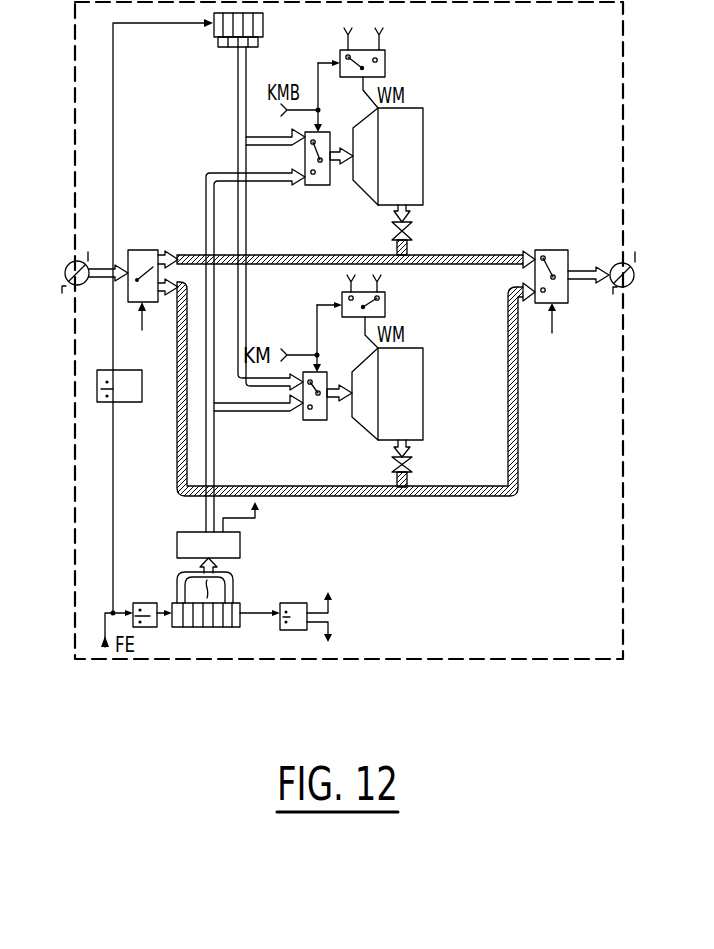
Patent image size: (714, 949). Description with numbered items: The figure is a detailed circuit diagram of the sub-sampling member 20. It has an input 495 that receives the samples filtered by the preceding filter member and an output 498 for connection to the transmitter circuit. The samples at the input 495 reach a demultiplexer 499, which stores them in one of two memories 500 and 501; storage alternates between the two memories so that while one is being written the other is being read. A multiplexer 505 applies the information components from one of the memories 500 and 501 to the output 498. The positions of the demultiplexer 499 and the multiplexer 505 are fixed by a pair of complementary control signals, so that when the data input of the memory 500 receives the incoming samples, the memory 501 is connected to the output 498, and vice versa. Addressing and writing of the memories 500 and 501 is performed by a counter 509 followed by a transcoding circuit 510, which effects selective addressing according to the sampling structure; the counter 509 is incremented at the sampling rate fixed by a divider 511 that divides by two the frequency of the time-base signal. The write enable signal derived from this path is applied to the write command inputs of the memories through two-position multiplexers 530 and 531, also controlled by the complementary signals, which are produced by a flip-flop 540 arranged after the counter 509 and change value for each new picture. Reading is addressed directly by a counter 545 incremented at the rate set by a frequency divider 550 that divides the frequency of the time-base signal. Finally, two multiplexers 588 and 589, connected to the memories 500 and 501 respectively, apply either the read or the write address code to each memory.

The sub-sampling member 20 is at (615, 598).
The input 495 is at (69, 263).
The output 498 is at (634, 282).
The demultiplexer 499 is at (148, 250).
The memory 500 is at (424, 146).
The memory 501 is at (424, 400).
The multiplexer 505 is at (551, 250).
The counter 509 is at (197, 627).
The transcoding circuit 510 is at (177, 540).
The divider 511 is at (150, 603).
The two-position multiplexer 530 is at (386, 62).
The two-position multiplexer 531 is at (386, 305).
The flip-flop 540 is at (297, 631).
The counter 545 is at (264, 24).
The frequency divider 550 is at (142, 388).
The multiplexer 588 is at (321, 186).
The multiplexer 589 is at (321, 421).